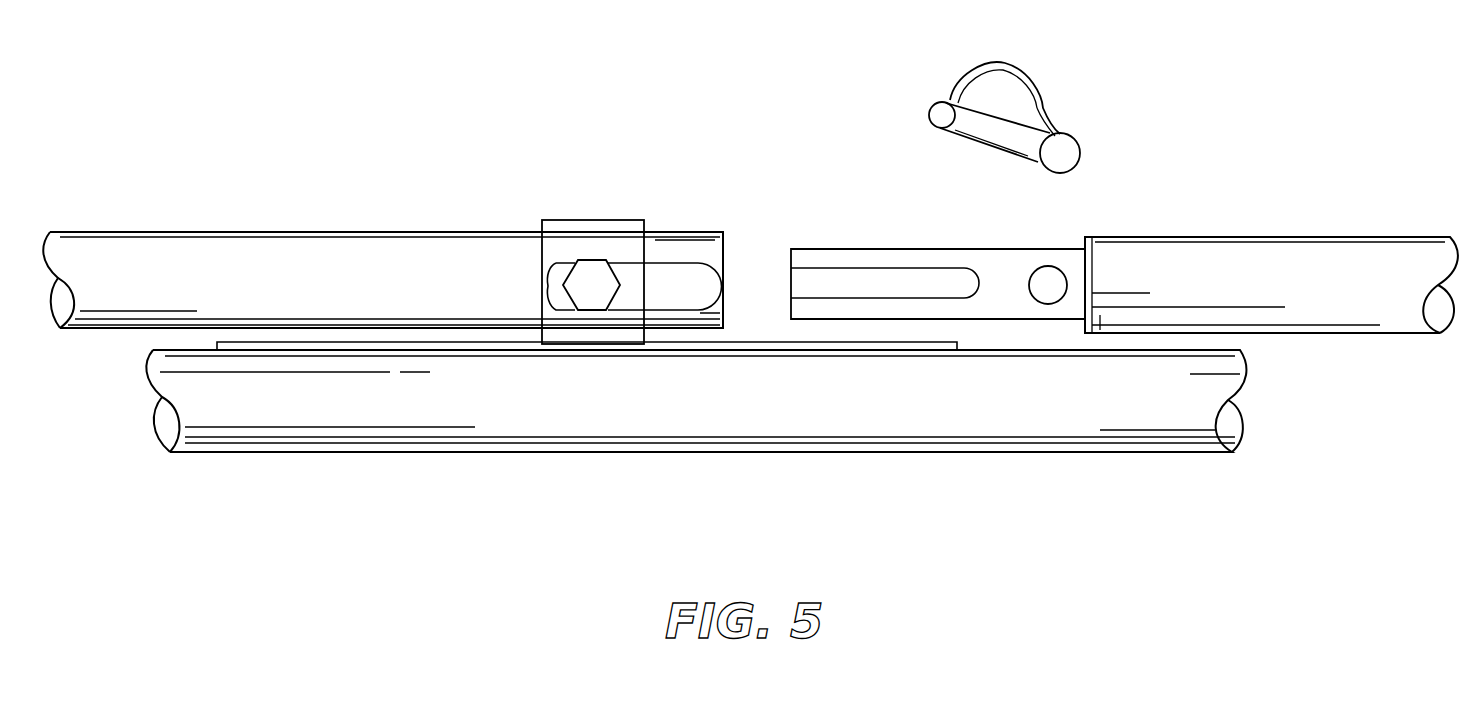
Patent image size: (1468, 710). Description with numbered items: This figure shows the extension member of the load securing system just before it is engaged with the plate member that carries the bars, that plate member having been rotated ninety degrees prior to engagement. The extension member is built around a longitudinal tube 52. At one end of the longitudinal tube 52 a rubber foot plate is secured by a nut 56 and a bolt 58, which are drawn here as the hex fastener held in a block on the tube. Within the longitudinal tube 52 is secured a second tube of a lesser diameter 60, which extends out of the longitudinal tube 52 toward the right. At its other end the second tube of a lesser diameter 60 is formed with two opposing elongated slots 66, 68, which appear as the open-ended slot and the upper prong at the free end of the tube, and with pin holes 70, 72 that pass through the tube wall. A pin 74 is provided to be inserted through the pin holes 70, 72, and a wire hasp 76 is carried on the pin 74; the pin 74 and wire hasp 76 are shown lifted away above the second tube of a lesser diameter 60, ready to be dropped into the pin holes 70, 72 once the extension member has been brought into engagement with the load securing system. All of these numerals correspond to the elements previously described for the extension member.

The longitudinal tube 52 is at (481, 232).
The nut 56 is at (625, 220).
The bolt 58 is at (595, 258).
The second tube of a lesser diameter 60 is at (950, 249).
The elongated slot 66 is at (821, 298).
The elongated slot 68 is at (862, 249).
The pin hole 70 is at (1033, 266).
The pin hole 72 is at (1056, 255).
The pin 74 is at (972, 141).
The wire hasp 76 is at (978, 65).